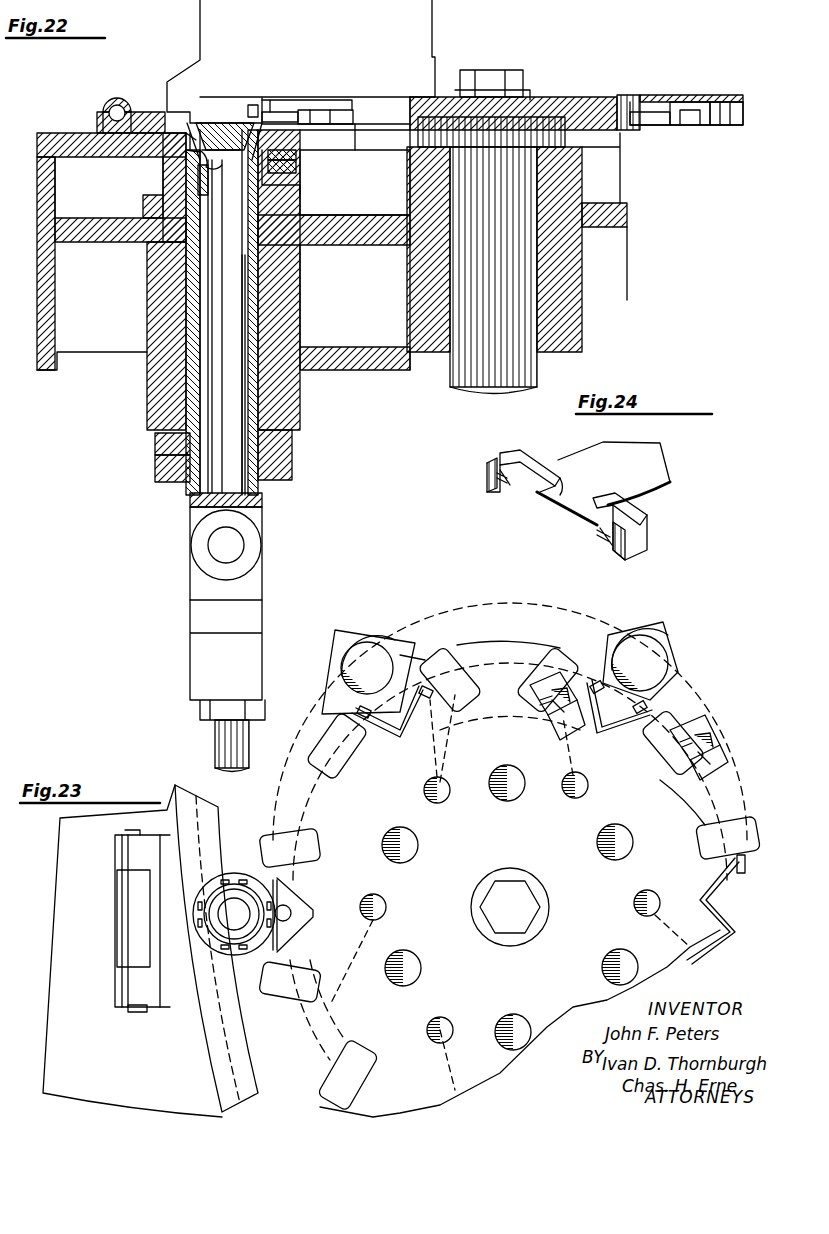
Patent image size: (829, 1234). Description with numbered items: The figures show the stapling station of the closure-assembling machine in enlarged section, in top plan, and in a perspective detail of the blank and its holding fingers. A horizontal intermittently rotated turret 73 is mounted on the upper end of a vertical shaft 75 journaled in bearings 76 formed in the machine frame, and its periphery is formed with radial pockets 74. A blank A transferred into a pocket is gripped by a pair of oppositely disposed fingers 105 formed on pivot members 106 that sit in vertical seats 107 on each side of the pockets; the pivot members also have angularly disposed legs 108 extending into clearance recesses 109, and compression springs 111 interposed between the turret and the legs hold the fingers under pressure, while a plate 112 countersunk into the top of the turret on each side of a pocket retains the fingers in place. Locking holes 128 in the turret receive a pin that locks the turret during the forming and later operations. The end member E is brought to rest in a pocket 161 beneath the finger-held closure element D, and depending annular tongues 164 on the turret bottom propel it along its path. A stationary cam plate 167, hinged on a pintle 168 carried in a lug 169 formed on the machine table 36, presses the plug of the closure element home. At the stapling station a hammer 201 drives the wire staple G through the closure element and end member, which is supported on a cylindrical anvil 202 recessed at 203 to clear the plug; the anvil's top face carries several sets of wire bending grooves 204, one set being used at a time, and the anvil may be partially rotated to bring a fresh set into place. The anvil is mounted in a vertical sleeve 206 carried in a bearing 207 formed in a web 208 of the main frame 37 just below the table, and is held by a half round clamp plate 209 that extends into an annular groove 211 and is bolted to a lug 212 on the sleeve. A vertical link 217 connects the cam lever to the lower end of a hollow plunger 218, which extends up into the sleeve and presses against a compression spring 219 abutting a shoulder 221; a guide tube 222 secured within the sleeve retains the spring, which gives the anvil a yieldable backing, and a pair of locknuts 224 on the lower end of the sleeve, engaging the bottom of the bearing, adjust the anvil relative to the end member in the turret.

In FIG. 22, the machine table 36 is at (60, 133).
In FIG. 23, the machine table 36 is at (78, 1090).
In FIG. 22, the main frame 37 is at (43, 262).
In FIG. 22, the turret 73 is at (561, 97).
In FIG. 23, the turret 73 is at (532, 907).
In FIG. 23, the radial pockets 74 is at (395, 748).
In FIG. 22, the vertical shaft 75 is at (490, 368).
In FIG. 22, the bearings 76 is at (560, 278).
In FIG. 22, the fingers 105 is at (282, 114).
In FIG. 23, the fingers 105 is at (400, 730).
In FIG. 24, the pivot members 106 is at (512, 452).
In FIG. 23, the pivot members 106 is at (552, 672).
In FIG. 23, the vertical seats 107 is at (568, 690).
In FIG. 24, the legs 108 is at (500, 470).
In FIG. 23, the legs 108 is at (700, 750).
In FIG. 23, the clearance recesses 109 is at (545, 688).
In FIG. 24, the compression springs 111 is at (503, 482).
In FIG. 23, the compression springs 111 is at (552, 710).
In FIG. 23, the plate 112 is at (447, 670).
In FIG. 23, the locking holes 128 is at (428, 850).
In FIG. 22, the pocket 161 is at (642, 120).
In FIG. 23, the pocket 161 is at (452, 749).
In FIG. 22, the annular tongues 164 is at (312, 112).
In FIG. 22, the cam plate 167 is at (150, 112).
In FIG. 23, the cam plate 167 is at (198, 1055).
In FIG. 22, the pintle 168 is at (110, 106).
In FIG. 23, the pintle 168 is at (135, 1012).
In FIG. 22, the lug 169 is at (119, 97).
In FIG. 23, the lug 169 is at (137, 935).
In FIG. 22, the hammer 201 is at (242, 97).
In FIG. 22, the cylindrical anvil 202 is at (186, 140).
In FIG. 23, the cylindrical anvil 202 is at (245, 876).
In FIG. 22, the recess 203 is at (198, 173).
In FIG. 23, the recess 203 is at (257, 888).
In FIG. 23, the wire bending grooves 204 is at (200, 942).
In FIG. 22, the vertical sleeve 206 is at (180, 244).
In FIG. 22, the bearing 207 is at (282, 388).
In FIG. 22, the web 208 is at (352, 228).
In FIG. 22, the half round clamp plate 209 is at (297, 158).
In FIG. 23, the half round clamp plate 209 is at (300, 910).
In FIG. 22, the annular groove 211 is at (200, 156).
In FIG. 22, the lug 212 is at (297, 170).
In FIG. 22, the vertical link 217 is at (230, 746).
In FIG. 22, the hollow plunger 218 is at (262, 492).
In FIG. 22, the compression spring 219 is at (193, 352).
In FIG. 22, the shoulder 221 is at (250, 292).
In FIG. 22, the guide tube 222 is at (252, 262).
In FIG. 22, the locknuts 224 is at (165, 470).
In FIG. 22, the closure element D is at (212, 122).
In FIG. 23, the closure element D is at (378, 645).
In FIG. 22, the end member E is at (350, 130).
In FIG. 23, the end member E is at (415, 657).
In FIG. 22, the wire staple G is at (256, 108).
In FIG. 24, the blank A is at (614, 473).